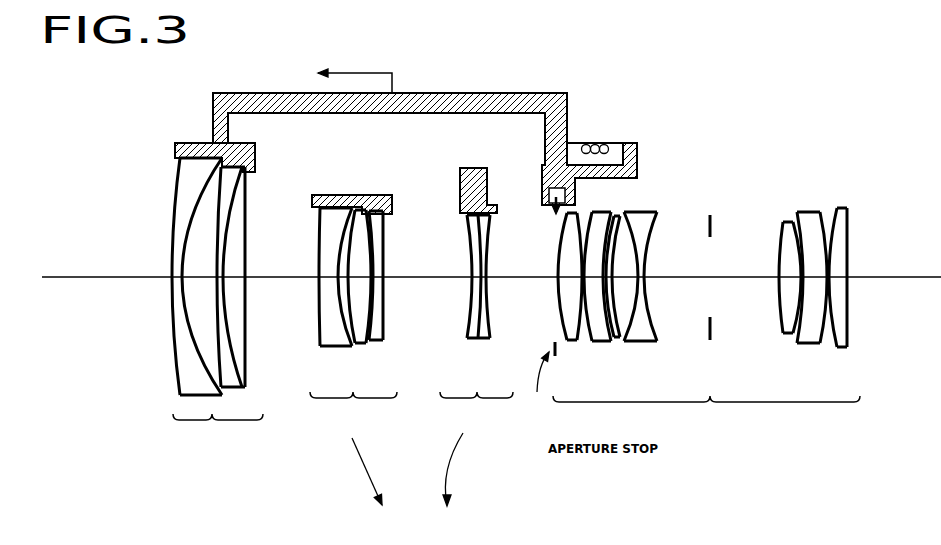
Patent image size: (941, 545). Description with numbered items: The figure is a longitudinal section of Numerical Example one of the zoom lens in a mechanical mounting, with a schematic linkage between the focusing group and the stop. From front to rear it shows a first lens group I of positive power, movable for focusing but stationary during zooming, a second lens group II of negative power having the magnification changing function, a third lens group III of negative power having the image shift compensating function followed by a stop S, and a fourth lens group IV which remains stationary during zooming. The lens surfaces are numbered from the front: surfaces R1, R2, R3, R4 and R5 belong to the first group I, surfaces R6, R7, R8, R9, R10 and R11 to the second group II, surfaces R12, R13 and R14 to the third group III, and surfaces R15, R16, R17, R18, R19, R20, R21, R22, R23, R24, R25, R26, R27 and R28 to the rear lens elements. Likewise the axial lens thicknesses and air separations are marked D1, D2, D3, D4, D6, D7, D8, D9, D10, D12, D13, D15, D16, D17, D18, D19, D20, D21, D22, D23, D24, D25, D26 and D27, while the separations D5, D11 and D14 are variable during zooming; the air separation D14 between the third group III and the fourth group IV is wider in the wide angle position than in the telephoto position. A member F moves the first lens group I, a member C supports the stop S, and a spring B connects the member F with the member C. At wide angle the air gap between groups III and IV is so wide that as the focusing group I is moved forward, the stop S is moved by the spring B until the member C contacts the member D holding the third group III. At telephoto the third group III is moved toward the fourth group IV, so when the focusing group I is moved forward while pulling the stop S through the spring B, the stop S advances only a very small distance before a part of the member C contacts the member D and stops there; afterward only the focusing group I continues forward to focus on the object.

The member for moving the first lens group F is at (250, 93).
The member holding the third lens group D is at (460, 170).
The stop S is at (545, 165).
The spring B is at (595, 114).
The member supporting the stop C is at (626, 143).
The first lens group I is at (211, 287).
The second lens group II is at (357, 328).
The third lens group III is at (491, 323).
The fourth lens group IV is at (696, 299).
The first lens surface R1 is at (178, 168).
The second lens surface R2 is at (218, 163).
The third lens surface R3 is at (224, 175).
The fourth lens surface R4 is at (240, 175).
The fifth lens surface R5 is at (247, 190).
The sixth lens surface R6 is at (318, 215).
The seventh lens surface R7 is at (346, 215).
The eighth lens surface R8 is at (355, 216).
The ninth lens surface R9 is at (364, 216).
The tenth lens surface R10 is at (371, 217).
The eleventh lens surface R11 is at (384, 220).
The twelfth lens surface R12 is at (465, 222).
The thirteenth lens surface R13 is at (478, 222).
The fourteenth lens surface R14 is at (489, 222).
The fifteenth lens surface R15 is at (568, 219).
The sixteenth lens surface R16 is at (577, 232).
The seventeenth lens surface R17 is at (594, 218).
The eighteenth lens surface R18 is at (608, 216).
The nineteenth lens surface R19 is at (616, 220).
The twentieth lens surface R20 is at (621, 218).
The twenty-first lens surface R21 is at (627, 216).
The twenty-second lens surface R22 is at (655, 224).
The twenty-third lens surface R23 is at (780, 242).
The twenty-fourth lens surface R24 is at (794, 226).
The twenty-fifth lens surface R25 is at (799, 216).
The twenty-sixth lens surface R26 is at (818, 214).
The twenty-seventh lens surface R27 is at (838, 212).
The twenty-eighth lens surface R28 is at (848, 228).
The first lens thickness D1 is at (176, 290).
The second lens thickness D2 is at (200, 282).
The third air separation D3 is at (232, 392).
The fourth lens thickness D4 is at (234, 290).
The fifth air separation D5 is at (273, 282).
The sixth lens thickness D6 is at (330, 285).
The seventh air separation D7 is at (350, 288).
The eighth lens thickness D8 is at (355, 345).
The ninth air separation D9 is at (370, 345).
The tenth lens thickness D10 is at (378, 290).
The eleventh air separation D11 is at (412, 282).
The twelfth lens thickness D12 is at (470, 290).
The thirteenth lens thickness D13 is at (483, 290).
The fourteenth air separation D14 is at (516, 282).
The fifteenth lens thickness D15 is at (558, 290).
The sixteenth air separation D16 is at (585, 305).
The seventeenth lens thickness D17 is at (600, 345).
The eighteenth lens thickness D18 is at (613, 345).
The nineteenth air separation D19 is at (620, 345).
The twentieth lens thickness D20 is at (647, 345).
The twenty-first lens thickness D21 is at (650, 300).
The twenty-second air separation D22 is at (688, 282).
The twenty-third lens thickness D23 is at (783, 290).
The twenty-fourth air separation D24 is at (795, 345).
The twenty-fifth lens thickness D25 is at (810, 345).
The twenty-sixth air separation D26 is at (830, 345).
The twenty-seventh lens thickness D27 is at (845, 300).